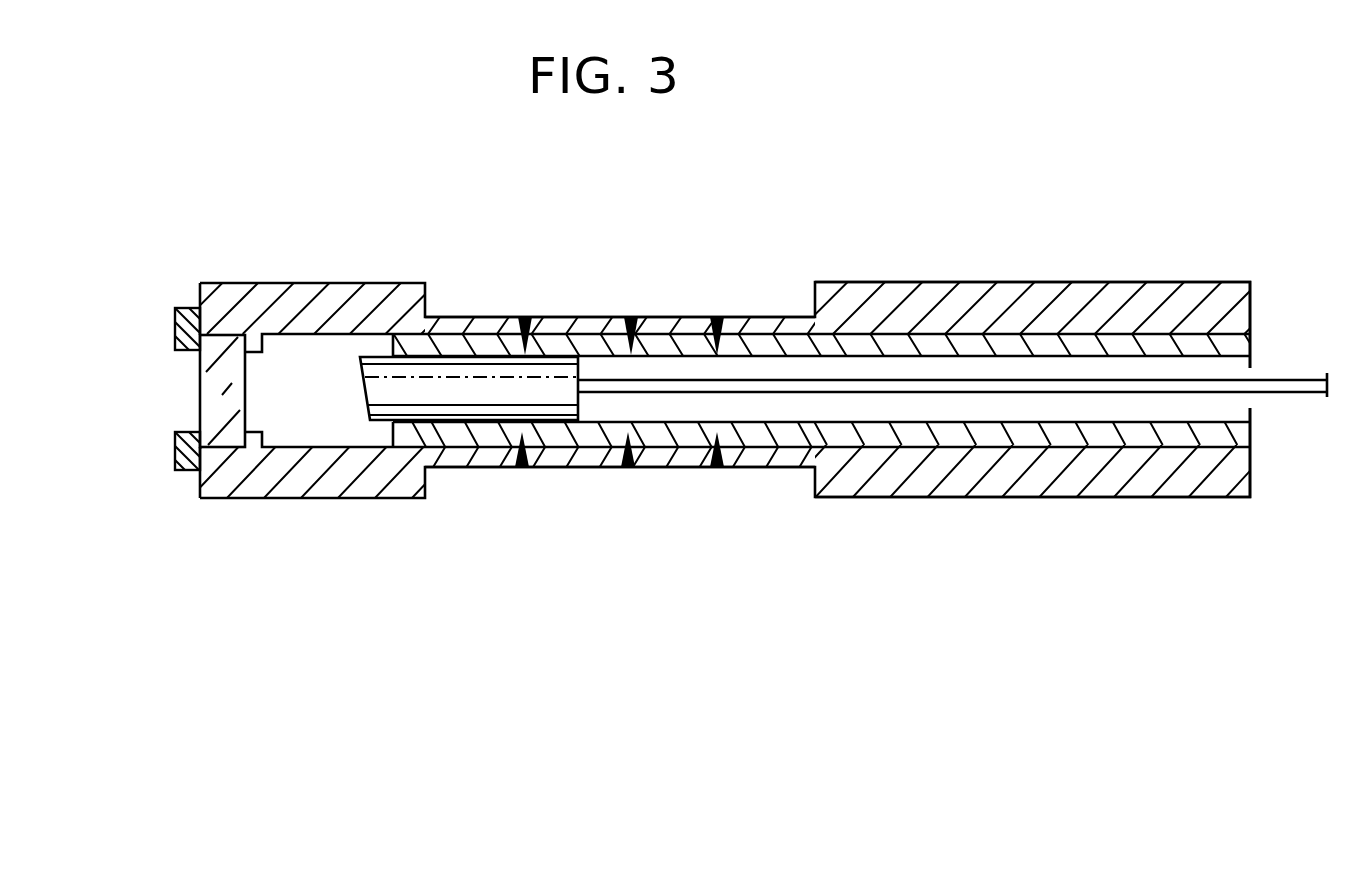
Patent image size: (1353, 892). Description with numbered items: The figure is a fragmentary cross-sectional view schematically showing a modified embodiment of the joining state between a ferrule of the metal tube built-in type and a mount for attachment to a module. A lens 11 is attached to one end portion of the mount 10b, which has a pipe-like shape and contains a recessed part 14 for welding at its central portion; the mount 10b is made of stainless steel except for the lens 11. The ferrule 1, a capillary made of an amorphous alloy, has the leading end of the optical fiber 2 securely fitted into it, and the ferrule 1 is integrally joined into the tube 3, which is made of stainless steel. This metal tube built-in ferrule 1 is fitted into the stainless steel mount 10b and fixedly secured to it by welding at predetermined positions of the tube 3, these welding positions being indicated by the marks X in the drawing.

The ferrule / lens rod 1 is at (458, 372).
The optical fiber 2 is at (1287, 393).
The inner tube 3 is at (1080, 333).
The housing sleeve 10b is at (858, 274).
The window 11 is at (200, 403).
The outer thin tube 14 is at (741, 317).
The weld / fixing points X is at (703, 490).